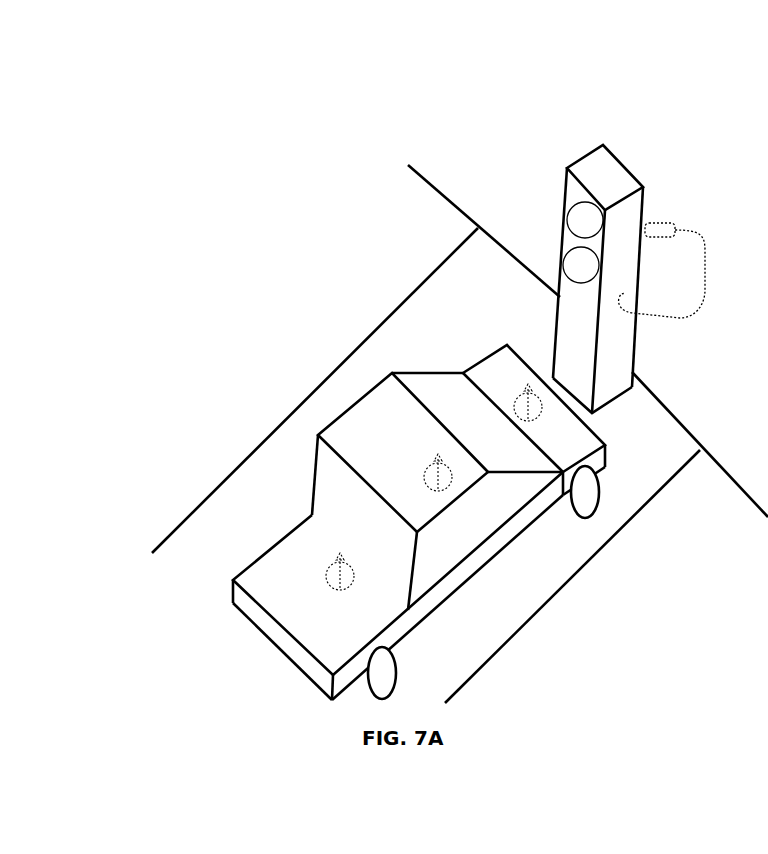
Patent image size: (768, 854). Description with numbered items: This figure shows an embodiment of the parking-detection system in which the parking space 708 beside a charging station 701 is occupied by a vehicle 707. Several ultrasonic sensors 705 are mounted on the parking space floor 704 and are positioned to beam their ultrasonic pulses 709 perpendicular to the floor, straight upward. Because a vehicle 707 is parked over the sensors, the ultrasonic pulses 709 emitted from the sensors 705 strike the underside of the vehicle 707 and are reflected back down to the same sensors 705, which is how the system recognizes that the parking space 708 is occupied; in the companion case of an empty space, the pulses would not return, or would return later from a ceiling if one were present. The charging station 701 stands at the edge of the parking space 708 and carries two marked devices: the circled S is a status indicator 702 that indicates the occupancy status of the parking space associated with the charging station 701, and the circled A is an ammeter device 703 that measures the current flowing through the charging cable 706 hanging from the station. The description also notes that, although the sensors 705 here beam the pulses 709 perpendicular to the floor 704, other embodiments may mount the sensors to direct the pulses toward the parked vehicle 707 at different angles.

The charging station 701 is at (598, 170).
The status indicator 702 is at (571, 218).
The ammeter device 703 is at (565, 267).
The parking space floor 704 is at (510, 327).
The ultrasonic sensors 705 is at (514, 405).
The charging cable 706 is at (703, 293).
The vehicle 707 is at (385, 410).
The parking space 708 is at (160, 622).
The ultrasonic pulses 709 is at (452, 481).